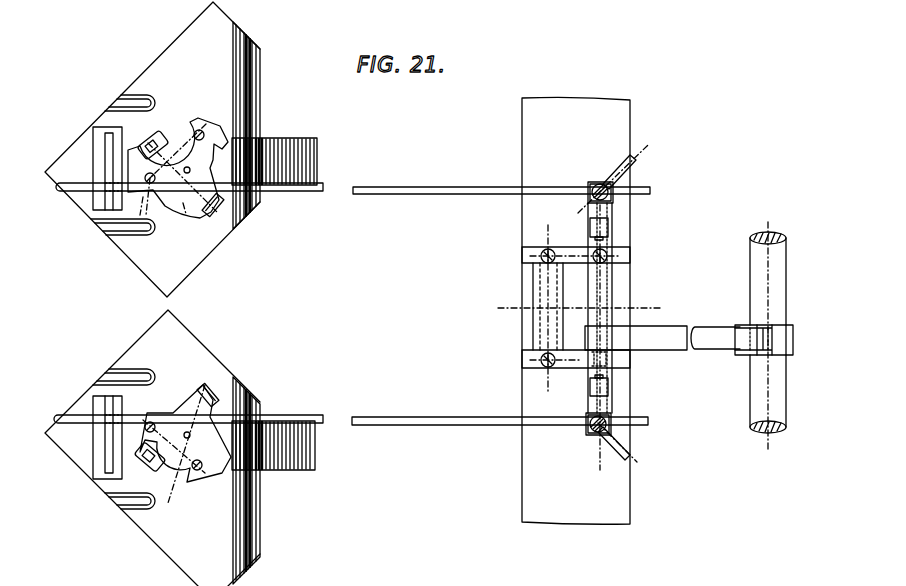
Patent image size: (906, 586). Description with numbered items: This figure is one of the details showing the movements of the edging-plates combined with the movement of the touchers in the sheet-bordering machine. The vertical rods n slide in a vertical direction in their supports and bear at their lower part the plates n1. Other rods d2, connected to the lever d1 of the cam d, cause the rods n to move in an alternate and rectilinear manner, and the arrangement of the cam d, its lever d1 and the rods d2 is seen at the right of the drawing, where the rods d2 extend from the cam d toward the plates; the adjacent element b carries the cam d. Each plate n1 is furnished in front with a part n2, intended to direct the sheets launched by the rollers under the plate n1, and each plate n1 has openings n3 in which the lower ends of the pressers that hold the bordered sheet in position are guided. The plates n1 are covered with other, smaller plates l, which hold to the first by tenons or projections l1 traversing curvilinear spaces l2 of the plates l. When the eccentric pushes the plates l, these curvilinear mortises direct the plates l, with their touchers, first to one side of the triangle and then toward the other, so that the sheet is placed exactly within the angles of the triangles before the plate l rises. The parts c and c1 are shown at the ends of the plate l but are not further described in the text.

The rod n is at (103, 303).
The plate n1 is at (152, 294).
The directing part n2 is at (282, 295).
The opening n3 is at (114, 299).
The smaller plate l is at (179, 310).
The tenon l1 is at (175, 305).
The curvilinear space l2 is at (176, 352).
The clamp block c is at (151, 298).
The clamp block c1 is at (211, 299).
The cam d is at (760, 328).
The lever d1 is at (662, 337).
The rod d2 is at (501, 303).
The cylinder b is at (768, 337).